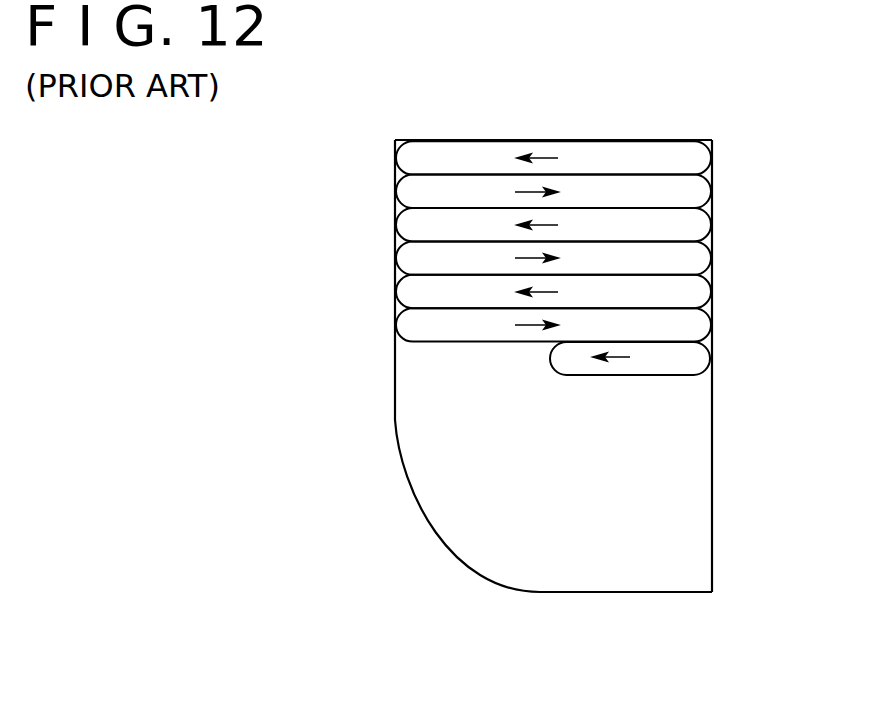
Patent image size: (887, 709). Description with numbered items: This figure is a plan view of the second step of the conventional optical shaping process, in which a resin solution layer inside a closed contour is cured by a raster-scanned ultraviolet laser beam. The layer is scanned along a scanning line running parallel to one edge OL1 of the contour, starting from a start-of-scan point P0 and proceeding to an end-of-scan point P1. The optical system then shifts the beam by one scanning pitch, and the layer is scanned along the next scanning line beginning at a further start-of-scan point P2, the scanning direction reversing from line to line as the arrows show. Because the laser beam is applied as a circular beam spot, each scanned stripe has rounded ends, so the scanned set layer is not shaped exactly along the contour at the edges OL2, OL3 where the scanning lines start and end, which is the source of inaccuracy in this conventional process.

The edge of the contour OL1 is at (613, 140).
The edge of the contour OL2 is at (713, 403).
The edge of the contour OL3 is at (396, 422).
The start-of-scan point P0 is at (713, 155).
The end-of-scan point P1 is at (396, 163).
The start-of-scan point P2 is at (396, 193).